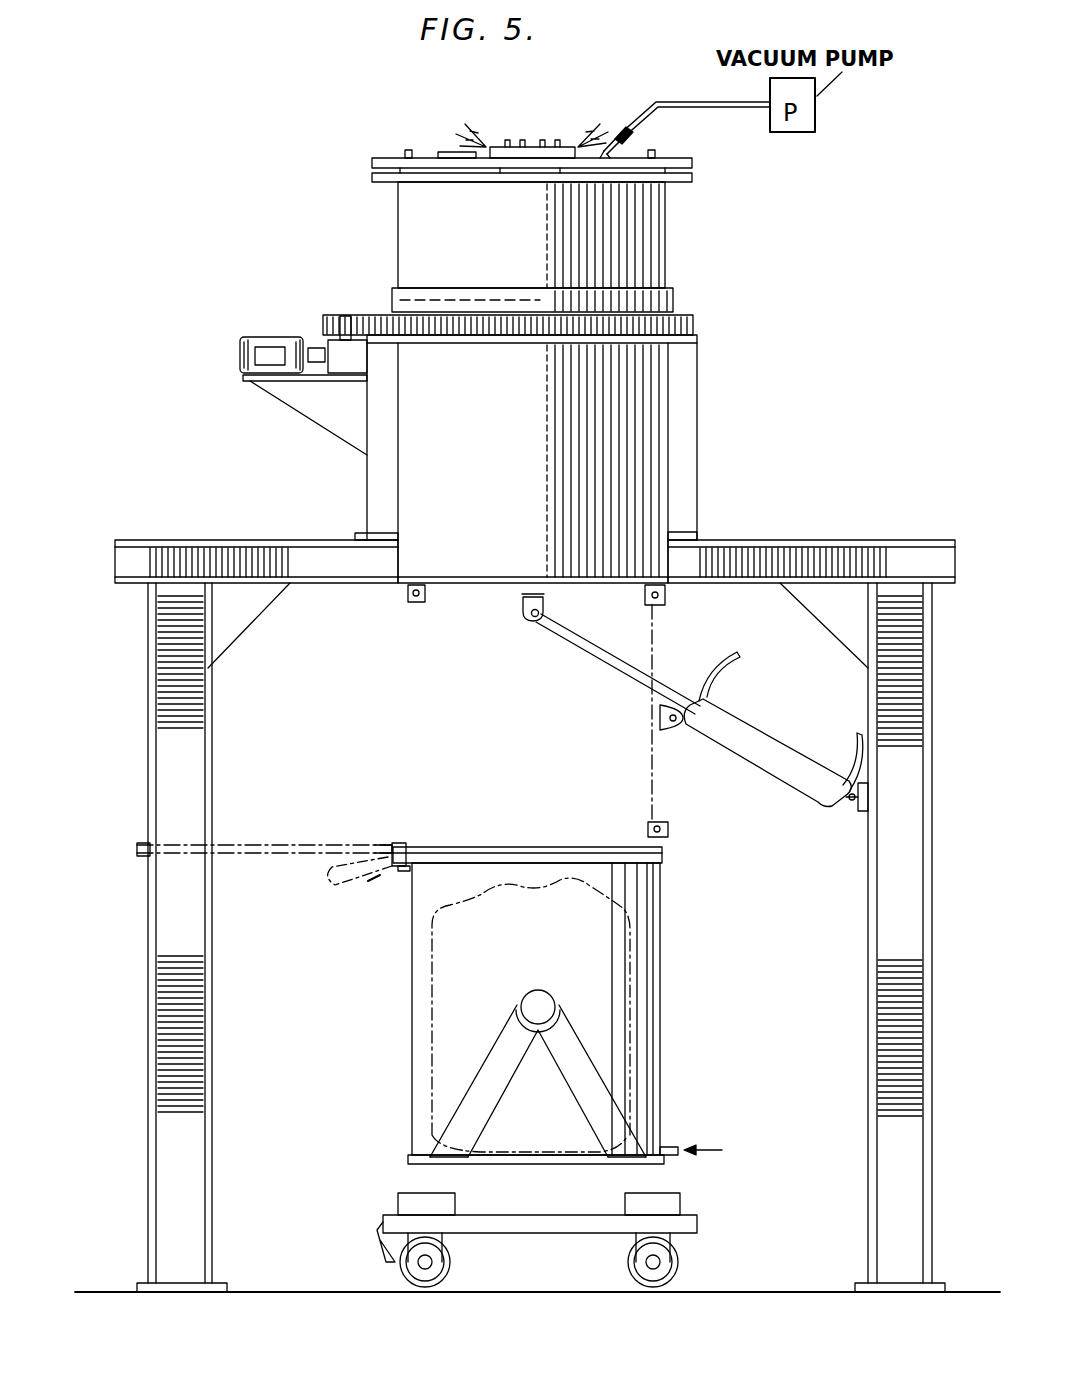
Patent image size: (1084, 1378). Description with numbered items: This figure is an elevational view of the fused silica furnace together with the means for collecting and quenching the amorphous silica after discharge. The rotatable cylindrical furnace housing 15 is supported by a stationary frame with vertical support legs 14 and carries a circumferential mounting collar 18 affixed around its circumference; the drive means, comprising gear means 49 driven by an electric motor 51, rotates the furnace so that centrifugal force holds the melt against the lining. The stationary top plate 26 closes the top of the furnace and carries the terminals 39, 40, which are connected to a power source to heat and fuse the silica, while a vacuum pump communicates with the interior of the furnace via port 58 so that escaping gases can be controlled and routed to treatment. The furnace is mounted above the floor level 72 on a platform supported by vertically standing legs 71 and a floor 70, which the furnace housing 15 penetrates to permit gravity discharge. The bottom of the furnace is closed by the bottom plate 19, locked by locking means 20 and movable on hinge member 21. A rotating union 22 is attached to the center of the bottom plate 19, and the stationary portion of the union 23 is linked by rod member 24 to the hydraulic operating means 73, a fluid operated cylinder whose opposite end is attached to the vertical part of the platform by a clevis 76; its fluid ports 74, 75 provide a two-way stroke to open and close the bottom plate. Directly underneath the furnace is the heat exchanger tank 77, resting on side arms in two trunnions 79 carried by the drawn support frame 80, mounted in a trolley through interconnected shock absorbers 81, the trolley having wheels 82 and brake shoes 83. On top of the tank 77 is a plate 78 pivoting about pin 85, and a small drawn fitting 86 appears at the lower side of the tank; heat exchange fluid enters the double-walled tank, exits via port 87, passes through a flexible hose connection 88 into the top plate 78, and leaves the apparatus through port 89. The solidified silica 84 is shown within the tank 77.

The vertical support legs 14 is at (367, 462).
The furnace housing 15 is at (666, 252).
The mounting collar 18 is at (677, 300).
The bottom plate 19 is at (456, 598).
The locking means 20 is at (409, 598).
The hinge member 21 is at (666, 597).
The rotating union 22 is at (523, 600).
The stationary portion of the union 23 is at (534, 620).
The rod member 24 is at (617, 663).
The top plate 26 is at (692, 163).
The terminal 39 is at (569, 145).
The terminal 40 is at (482, 141).
The gear means 49 is at (363, 316).
The electric motor 51 is at (284, 337).
The port 58 is at (630, 143).
The floor 70 is at (252, 540).
The legs 71 is at (148, 970).
The floor level 72 is at (300, 1291).
The hydraulic operating means 73 is at (765, 740).
The fluid port 74 is at (722, 682).
The fluid port 75 is at (852, 737).
The clevis 76 is at (852, 801).
The heat exchanger tank 77 is at (662, 986).
The top plate 78 is at (500, 846).
The trunnions 79 is at (548, 995).
The A-frame support 80 is at (572, 1082).
The shock absorbers 81 is at (398, 1206).
The wheels 82 is at (680, 1257).
The brake shoes 83 is at (383, 1247).
The solidified silica 84 is at (620, 905).
The pin 85 is at (400, 843).
The latch 86 is at (678, 1147).
The port 87 is at (398, 871).
The flexible hose connection 88 is at (355, 882).
The port 89 is at (390, 851).